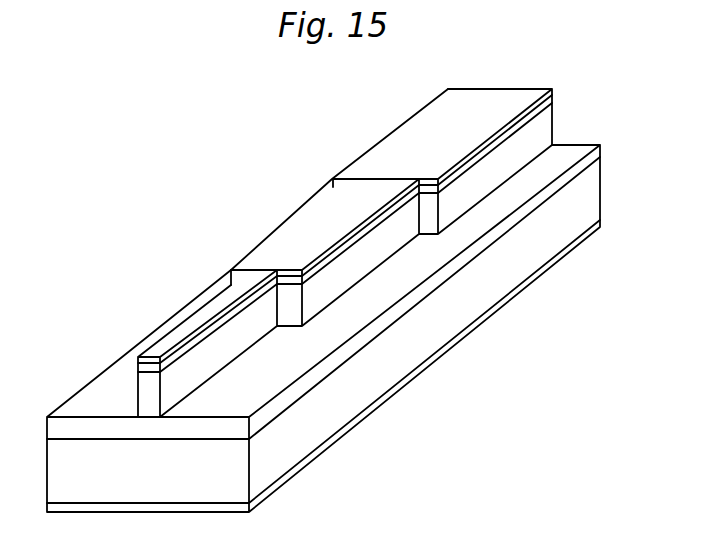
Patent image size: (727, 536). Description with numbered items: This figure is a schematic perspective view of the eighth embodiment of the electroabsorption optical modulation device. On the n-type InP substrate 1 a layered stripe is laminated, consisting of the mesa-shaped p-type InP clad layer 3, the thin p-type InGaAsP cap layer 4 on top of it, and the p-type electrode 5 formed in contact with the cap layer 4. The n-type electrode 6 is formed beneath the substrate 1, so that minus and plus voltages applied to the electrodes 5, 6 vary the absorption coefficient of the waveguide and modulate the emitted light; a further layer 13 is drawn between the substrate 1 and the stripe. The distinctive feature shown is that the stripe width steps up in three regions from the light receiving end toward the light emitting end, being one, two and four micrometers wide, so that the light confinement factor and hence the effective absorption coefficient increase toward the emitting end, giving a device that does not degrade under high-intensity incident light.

The n-type InP substrate 1 is at (600, 193).
The p-type InP clad layer 3 is at (550, 132).
The p-type InGaAsP cap layer 4 is at (555, 102).
The p-type electrode 5 is at (552, 89).
The n-type electrode 6 is at (603, 218).
The top layer of substrate 13 is at (602, 155).